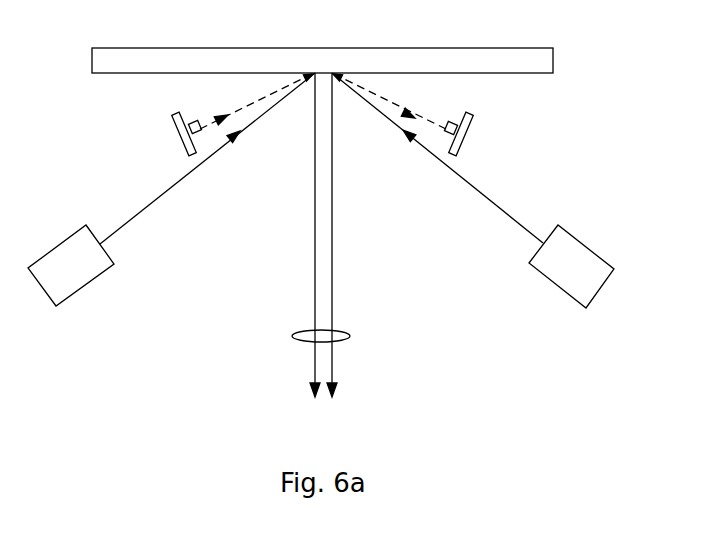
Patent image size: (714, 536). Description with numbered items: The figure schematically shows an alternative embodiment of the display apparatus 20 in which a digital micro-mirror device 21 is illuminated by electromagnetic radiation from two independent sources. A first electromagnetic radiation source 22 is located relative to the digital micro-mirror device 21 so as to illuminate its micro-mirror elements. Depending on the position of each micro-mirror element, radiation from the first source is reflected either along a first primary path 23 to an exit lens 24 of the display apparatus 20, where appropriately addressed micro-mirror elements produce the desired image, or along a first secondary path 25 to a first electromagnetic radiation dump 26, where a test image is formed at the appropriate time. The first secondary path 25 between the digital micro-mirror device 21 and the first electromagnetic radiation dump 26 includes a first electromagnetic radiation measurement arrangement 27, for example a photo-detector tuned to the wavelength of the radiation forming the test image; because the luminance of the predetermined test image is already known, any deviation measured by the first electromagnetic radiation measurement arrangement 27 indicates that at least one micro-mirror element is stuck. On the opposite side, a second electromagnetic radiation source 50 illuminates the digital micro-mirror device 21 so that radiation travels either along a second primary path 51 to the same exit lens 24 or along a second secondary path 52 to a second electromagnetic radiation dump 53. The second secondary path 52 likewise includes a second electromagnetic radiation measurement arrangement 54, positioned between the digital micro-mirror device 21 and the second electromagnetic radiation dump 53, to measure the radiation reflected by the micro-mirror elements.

The display apparatus 20 is at (609, 163).
The digital micro-mirror device 21 is at (553, 72).
The first electromagnetic radiation source 22 is at (64, 264).
The first primary path 23 is at (314, 362).
The exit lens 24 is at (343, 336).
The first secondary path 25 is at (420, 115).
The first electromagnetic radiation dump 26 is at (460, 147).
The first electromagnetic radiation measurement arrangement 27 is at (458, 124).
The second electromagnetic radiation source 50 is at (580, 261).
The second primary path 51 is at (333, 367).
The second secondary path 52 is at (225, 115).
The second electromagnetic radiation dump 53 is at (186, 145).
The second electromagnetic radiation measurement arrangement 54 is at (192, 124).